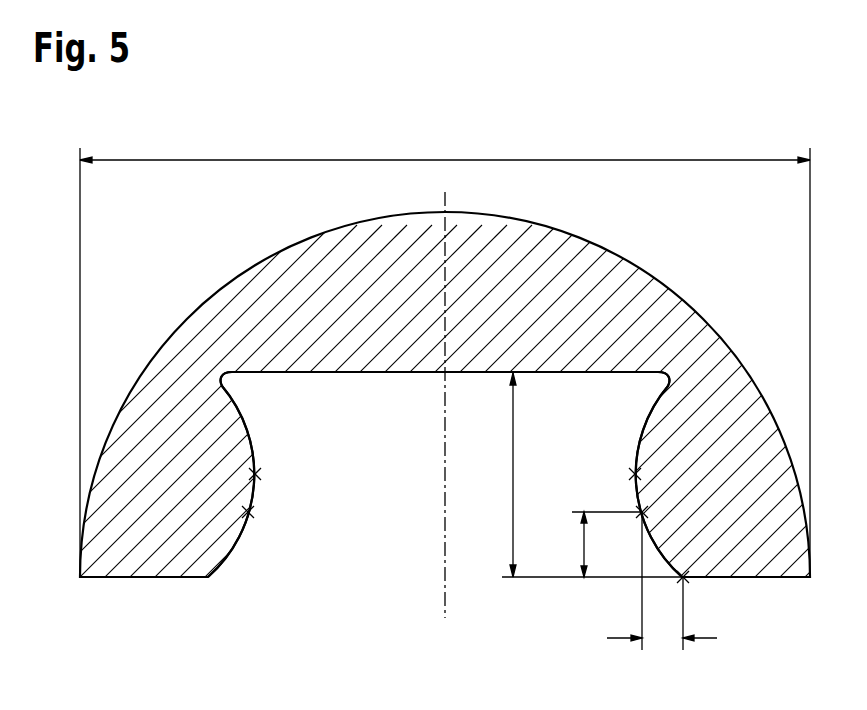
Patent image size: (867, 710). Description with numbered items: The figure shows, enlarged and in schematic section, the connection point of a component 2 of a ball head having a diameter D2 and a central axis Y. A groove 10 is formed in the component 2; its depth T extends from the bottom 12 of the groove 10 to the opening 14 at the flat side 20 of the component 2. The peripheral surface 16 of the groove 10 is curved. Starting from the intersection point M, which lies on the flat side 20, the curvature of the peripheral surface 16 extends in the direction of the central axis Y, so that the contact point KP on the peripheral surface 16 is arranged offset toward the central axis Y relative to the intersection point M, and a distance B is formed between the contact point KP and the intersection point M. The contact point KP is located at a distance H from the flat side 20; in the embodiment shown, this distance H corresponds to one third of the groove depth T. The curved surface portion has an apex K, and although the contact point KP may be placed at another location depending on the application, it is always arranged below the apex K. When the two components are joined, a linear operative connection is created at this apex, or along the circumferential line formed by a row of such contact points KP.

The component 2 is at (366, 327).
The groove 10 is at (445, 474).
The bottom of the groove 12 is at (368, 372).
The opening 14 is at (345, 606).
The peripheral surface 16 is at (645, 422).
The flat side 20 is at (780, 578).
The central axis Y is at (445, 207).
The diameter D2 is at (445, 354).
The depth of the groove T is at (585, 475).
The distance H is at (601, 544).
The distance B is at (662, 581).
The apex K is at (634, 474).
The contact point KP is at (642, 512).
The intersection point M is at (688, 582).